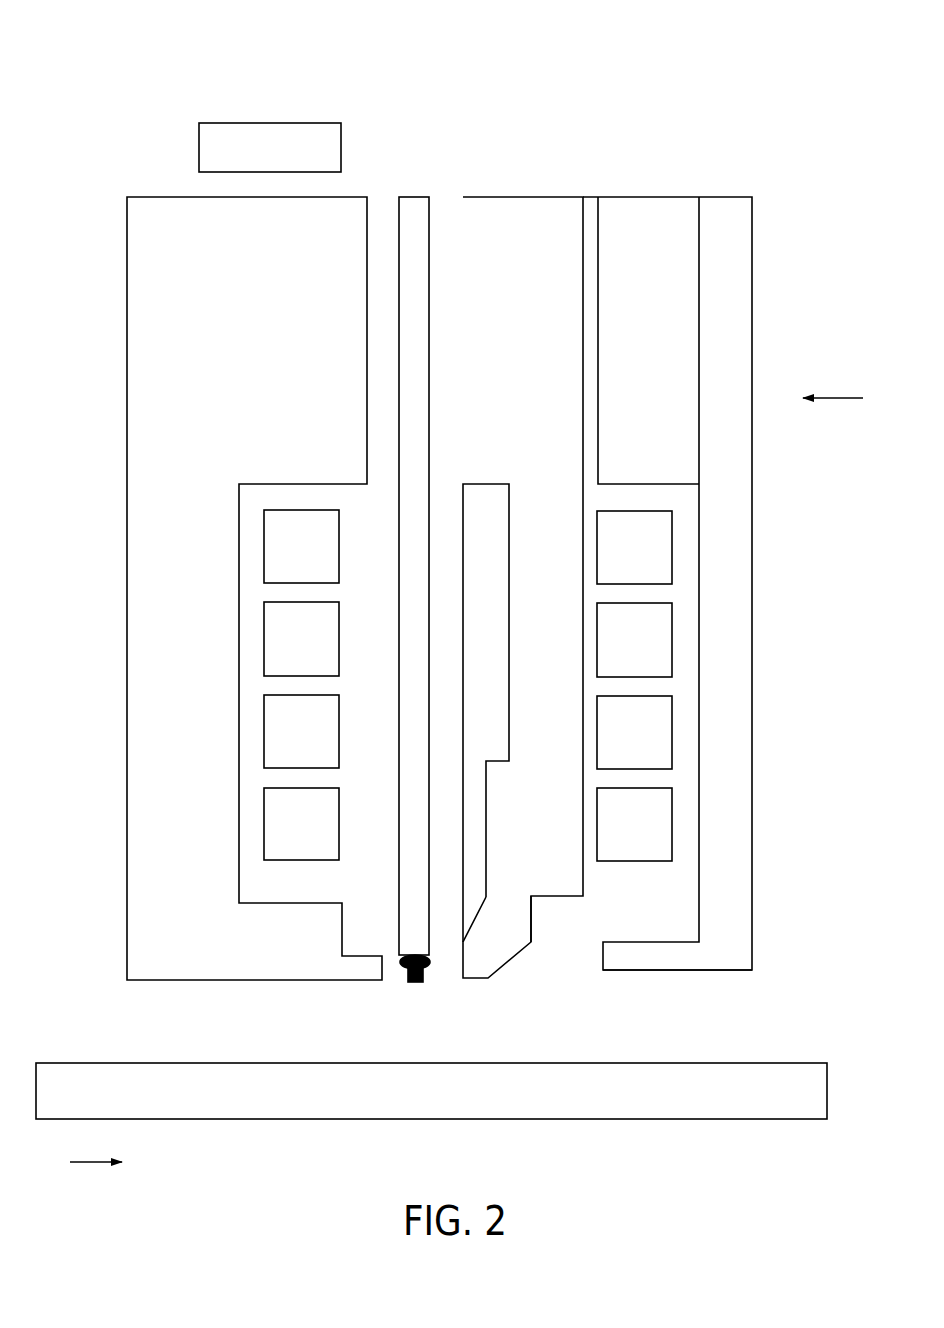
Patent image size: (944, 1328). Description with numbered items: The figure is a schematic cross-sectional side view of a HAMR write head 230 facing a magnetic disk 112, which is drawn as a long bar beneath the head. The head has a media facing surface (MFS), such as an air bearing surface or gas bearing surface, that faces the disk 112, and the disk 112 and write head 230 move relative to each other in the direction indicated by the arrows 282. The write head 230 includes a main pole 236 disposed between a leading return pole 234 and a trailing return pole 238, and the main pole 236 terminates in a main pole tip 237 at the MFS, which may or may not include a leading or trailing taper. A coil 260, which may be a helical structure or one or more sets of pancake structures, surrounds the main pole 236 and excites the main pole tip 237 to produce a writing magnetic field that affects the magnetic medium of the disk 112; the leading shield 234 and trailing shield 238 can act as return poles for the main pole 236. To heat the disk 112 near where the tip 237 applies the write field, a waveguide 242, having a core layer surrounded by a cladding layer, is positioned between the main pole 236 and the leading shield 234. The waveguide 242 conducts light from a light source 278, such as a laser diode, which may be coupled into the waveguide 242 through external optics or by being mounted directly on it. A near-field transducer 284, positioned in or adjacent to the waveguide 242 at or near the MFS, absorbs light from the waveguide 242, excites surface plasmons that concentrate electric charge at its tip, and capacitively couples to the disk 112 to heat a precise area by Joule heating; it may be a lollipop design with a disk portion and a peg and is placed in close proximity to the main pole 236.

The HAMR write head 230 is at (152, 72).
The leading return pole 234 is at (194, 652).
The main pole 236 is at (565, 652).
The main pole tip 237 is at (520, 943).
The trailing return pole 238 is at (748, 652).
The waveguide 242 is at (415, 374).
The coil 260 is at (325, 558).
The light source 278 is at (409, 190).
The arrows 282 is at (838, 398).
The near-field transducer 284 is at (415, 984).
The magnetic disk 112 is at (439, 1101).
The media facing surface MFS is at (710, 992).